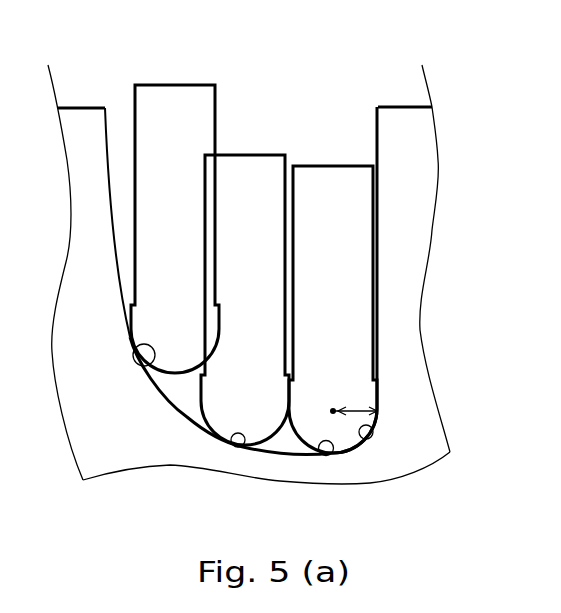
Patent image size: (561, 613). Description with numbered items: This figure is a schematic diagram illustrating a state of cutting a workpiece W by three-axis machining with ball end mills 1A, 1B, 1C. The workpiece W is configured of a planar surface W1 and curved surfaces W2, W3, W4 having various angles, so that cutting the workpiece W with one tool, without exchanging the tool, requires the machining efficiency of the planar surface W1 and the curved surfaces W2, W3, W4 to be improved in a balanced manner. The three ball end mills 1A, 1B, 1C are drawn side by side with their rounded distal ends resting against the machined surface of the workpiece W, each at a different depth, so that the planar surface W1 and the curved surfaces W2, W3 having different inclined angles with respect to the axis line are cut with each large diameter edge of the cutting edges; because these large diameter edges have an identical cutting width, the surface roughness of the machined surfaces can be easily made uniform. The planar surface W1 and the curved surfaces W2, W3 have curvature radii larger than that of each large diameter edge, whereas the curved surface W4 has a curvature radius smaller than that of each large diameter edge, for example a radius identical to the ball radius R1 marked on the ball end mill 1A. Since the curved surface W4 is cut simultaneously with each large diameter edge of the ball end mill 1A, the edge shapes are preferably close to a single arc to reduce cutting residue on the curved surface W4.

The ball end mill 1A is at (334, 165).
The ball end mill 1B is at (246, 153).
The ball end mill 1C is at (175, 83).
The workpiece W is at (420, 152).
The planar surface W1 is at (322, 456).
The curved surface W2 is at (242, 447).
The curved surface W3 is at (139, 365).
The curved surface W4 is at (365, 440).
The ball radius R1 is at (357, 405).